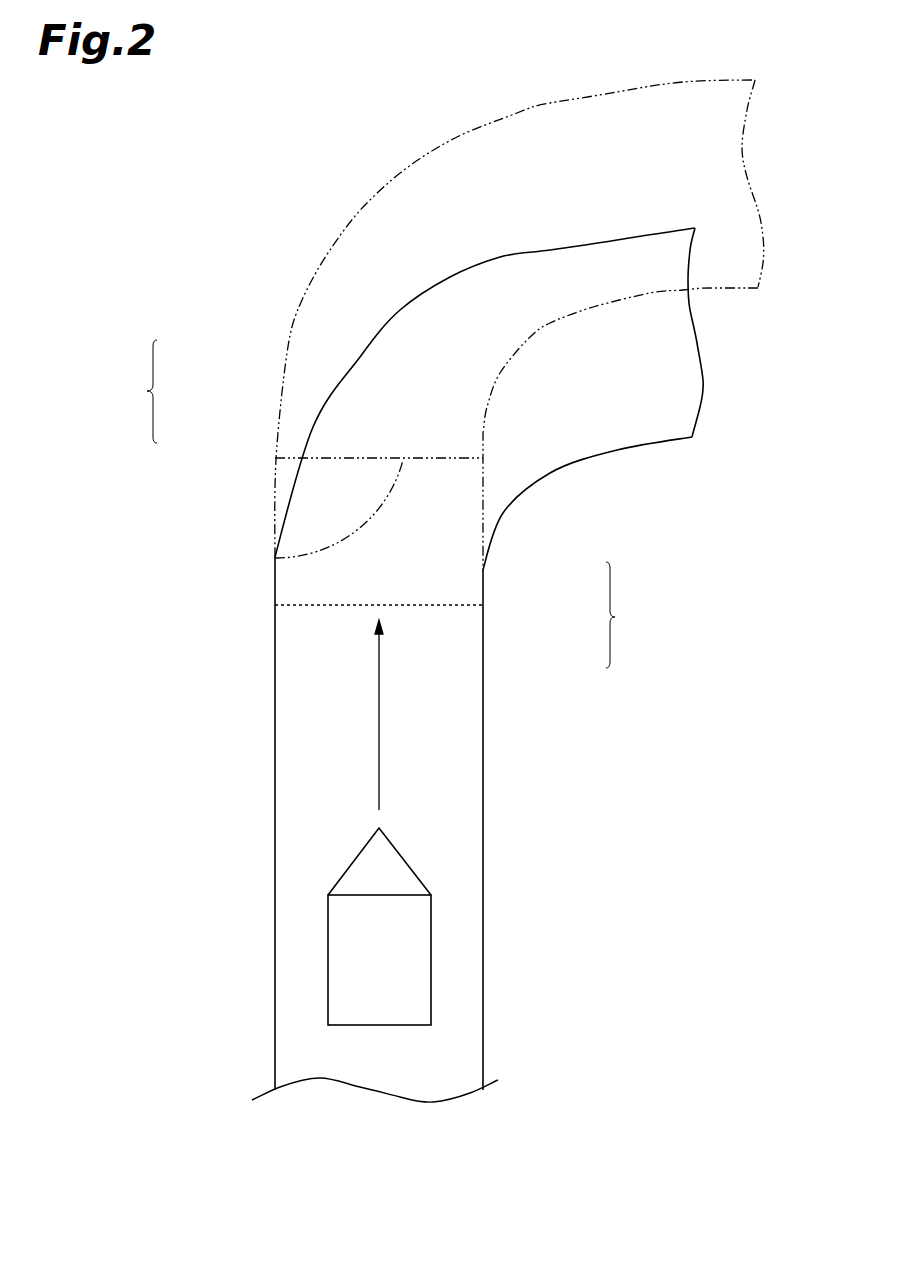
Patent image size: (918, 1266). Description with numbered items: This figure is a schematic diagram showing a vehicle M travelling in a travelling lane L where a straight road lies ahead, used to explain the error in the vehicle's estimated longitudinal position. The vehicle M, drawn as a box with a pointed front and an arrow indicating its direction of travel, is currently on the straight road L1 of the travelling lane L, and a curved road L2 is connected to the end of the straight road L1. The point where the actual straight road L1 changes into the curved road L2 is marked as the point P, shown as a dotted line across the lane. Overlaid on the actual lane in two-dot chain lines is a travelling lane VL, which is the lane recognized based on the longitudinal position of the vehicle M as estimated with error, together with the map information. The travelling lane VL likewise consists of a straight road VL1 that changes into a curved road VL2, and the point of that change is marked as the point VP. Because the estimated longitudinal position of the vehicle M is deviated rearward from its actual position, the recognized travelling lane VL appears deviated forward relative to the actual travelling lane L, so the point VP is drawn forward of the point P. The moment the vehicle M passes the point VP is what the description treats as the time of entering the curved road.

The vehicle M is at (328, 958).
The point P is at (336, 607).
The point VP is at (275, 557).
The travelling lane VL is at (133, 391).
The straight road VL1 is at (275, 493).
The curved road VL2 is at (297, 320).
The travelling lane L is at (622, 615).
The straight road L1 is at (483, 665).
The curved road L2 is at (503, 513).